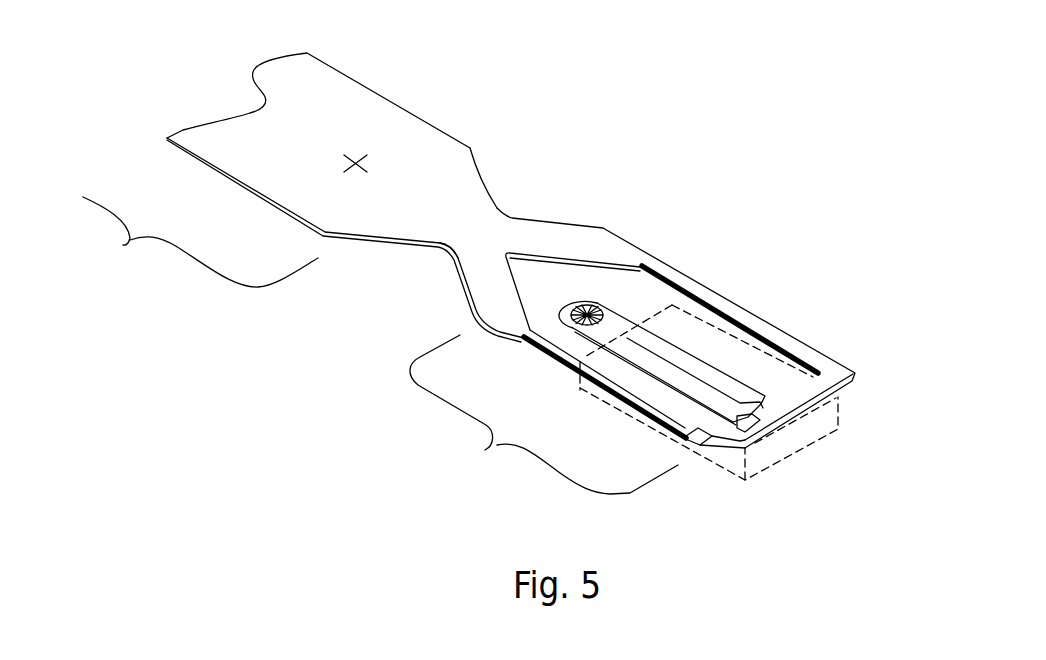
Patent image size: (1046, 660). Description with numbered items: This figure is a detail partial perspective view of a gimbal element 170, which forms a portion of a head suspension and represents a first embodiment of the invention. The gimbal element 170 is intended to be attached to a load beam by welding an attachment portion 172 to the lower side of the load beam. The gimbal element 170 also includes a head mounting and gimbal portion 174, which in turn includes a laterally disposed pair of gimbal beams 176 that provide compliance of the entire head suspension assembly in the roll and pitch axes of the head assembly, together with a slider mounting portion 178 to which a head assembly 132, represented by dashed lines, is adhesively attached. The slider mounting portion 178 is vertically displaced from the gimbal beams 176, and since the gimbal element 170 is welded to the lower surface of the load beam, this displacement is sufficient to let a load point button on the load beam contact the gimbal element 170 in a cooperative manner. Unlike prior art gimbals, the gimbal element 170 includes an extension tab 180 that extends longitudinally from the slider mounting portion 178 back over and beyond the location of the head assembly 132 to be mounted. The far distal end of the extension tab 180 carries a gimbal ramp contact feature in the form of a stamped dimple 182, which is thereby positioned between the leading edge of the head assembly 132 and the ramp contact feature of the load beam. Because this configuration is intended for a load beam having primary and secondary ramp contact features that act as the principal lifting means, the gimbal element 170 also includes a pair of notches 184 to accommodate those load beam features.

The gimbal element 170 is at (718, 184).
The attachment portion 172 is at (303, 197).
The head mounting and gimbal portion 174 is at (544, 414).
The gimbal beams 176 is at (810, 353).
The slider mounting portion 178 is at (767, 423).
The extension tab 180 is at (693, 372).
The stamped dimple 182 is at (597, 318).
The notches 184 is at (498, 208).
The head assembly 132 is at (822, 425).